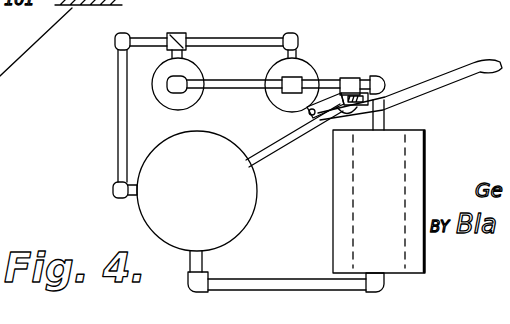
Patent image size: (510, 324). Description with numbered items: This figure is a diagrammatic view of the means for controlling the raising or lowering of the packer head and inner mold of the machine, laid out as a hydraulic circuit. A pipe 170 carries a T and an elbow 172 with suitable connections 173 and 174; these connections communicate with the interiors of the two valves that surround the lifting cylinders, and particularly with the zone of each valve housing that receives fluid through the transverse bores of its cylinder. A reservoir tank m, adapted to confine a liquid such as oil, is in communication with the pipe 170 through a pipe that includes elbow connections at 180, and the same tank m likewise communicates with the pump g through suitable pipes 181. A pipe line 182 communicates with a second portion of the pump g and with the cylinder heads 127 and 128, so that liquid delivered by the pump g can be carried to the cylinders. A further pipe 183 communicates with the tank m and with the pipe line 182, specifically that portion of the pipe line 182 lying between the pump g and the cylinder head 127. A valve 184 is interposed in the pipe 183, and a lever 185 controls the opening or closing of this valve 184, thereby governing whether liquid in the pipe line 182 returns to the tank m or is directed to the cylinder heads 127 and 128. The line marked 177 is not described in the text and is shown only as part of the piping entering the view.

The cylinder head 127 is at (328, 82).
The cylinder head 128 is at (196, 108).
The pipe 170 is at (247, 37).
The elbow 172 is at (293, 40).
The connection 173 is at (300, 52).
The connection 174 is at (170, 57).
The pipe 177 is at (190, 40).
The elbow connections 180 is at (118, 107).
The pipes 181 is at (240, 278).
The pipe line 182 is at (312, 78).
The pipe 183 is at (284, 140).
The valve 184 is at (383, 84).
The lever 185 is at (418, 88).
The reservoir tank m is at (140, 209).
The pump g is at (402, 160).